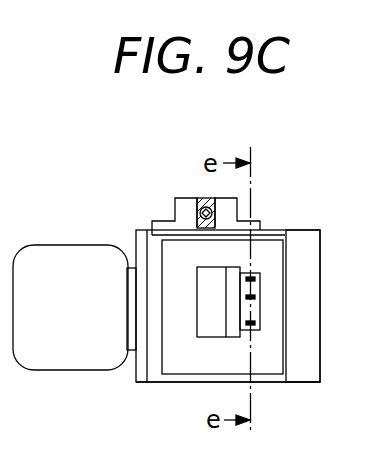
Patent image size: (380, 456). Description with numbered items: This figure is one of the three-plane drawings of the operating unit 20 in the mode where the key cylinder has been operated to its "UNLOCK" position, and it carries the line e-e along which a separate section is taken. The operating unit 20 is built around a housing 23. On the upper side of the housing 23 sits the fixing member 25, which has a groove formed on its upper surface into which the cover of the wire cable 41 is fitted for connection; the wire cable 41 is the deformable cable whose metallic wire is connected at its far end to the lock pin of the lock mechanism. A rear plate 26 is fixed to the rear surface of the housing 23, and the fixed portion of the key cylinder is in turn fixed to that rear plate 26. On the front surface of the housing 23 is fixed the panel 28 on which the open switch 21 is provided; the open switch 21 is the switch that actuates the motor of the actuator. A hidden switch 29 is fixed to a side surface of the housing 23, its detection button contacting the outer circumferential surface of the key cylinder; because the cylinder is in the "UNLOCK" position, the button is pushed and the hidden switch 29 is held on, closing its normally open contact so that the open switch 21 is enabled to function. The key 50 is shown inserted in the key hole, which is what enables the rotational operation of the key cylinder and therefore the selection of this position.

The operating unit 20 is at (129, 160).
The open switch 21 is at (128, 296).
The housing 23 is at (277, 231).
The fixing member 25 is at (175, 212).
The rear plate 26 is at (312, 230).
The panel 28 is at (133, 371).
The hidden switch 29 is at (260, 283).
The wire cable 41 is at (202, 200).
The key 50 is at (52, 357).